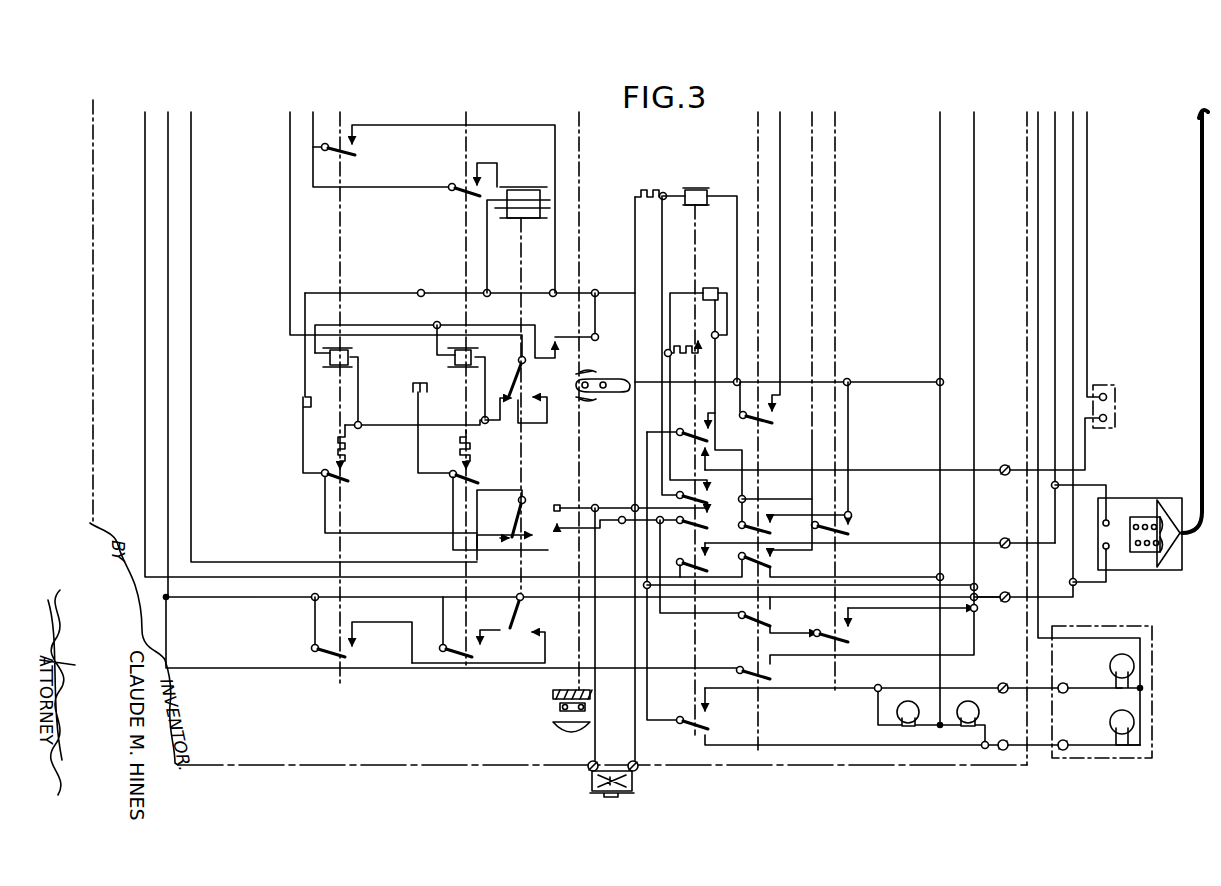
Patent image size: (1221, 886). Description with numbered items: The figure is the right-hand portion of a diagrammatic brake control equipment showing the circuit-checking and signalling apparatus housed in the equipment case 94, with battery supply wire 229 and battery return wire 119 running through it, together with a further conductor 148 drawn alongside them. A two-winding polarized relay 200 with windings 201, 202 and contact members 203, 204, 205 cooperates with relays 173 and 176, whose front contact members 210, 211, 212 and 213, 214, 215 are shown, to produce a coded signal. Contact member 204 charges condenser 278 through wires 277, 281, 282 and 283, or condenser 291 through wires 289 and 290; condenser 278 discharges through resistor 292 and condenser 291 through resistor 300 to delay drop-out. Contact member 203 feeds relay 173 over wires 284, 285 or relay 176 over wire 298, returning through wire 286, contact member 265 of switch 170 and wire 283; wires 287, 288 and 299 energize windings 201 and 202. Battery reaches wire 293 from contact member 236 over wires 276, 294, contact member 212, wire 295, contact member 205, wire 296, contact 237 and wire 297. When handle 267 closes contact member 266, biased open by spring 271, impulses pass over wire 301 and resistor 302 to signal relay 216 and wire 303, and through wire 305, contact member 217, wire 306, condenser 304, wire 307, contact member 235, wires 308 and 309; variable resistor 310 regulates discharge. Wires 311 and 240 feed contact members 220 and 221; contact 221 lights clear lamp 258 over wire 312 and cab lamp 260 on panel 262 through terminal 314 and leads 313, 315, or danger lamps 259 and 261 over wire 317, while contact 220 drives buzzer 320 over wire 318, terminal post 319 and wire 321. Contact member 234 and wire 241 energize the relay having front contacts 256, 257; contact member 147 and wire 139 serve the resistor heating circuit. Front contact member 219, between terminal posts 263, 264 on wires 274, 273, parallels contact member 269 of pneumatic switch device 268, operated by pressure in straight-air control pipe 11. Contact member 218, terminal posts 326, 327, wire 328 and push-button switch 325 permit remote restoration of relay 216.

The straight-air control pipe 11 is at (1195, 334).
The equipment case 94 is at (89, 178).
The battery return wire 119 is at (940, 130).
The wire 139 is at (145, 257).
The front and back contact member 147 is at (771, 561).
The conductor 148 is at (812, 207).
The switch 170 is at (574, 385).
The relay 173 is at (353, 356).
The relay 176 is at (478, 356).
The two-winding polarized relay 200 is at (521, 185).
The winding 201 is at (530, 199).
The winding 202 is at (524, 220).
The contact member 203 is at (507, 389).
The contact member 204 is at (511, 531).
The contact member 205 is at (519, 618).
The front contact member 210 is at (352, 149).
The front contact member 211 is at (352, 475).
The front contact member 212 is at (348, 633).
The front contact member 213 is at (468, 193).
The front contact member 214 is at (484, 475).
The front contact member 215 is at (483, 633).
The signal relay 216 is at (683, 188).
The front contact member 217 is at (745, 491).
The front contact member 218 is at (715, 519).
The front contact member 219 is at (711, 560).
The front and back contact member 220 is at (697, 446).
The front and back contact member 221 is at (711, 711).
The battery supply wire 229 is at (974, 193).
The front contact member 234 is at (908, 575).
The front contact member 235 is at (773, 529).
The front contact member 236 is at (773, 673).
The front and back contact member 237 is at (781, 614).
The wire 240 is at (647, 648).
The wire 241 is at (778, 150).
The front contact 256 is at (852, 529).
The front contact 257 is at (853, 630).
The signal lamp 258 is at (895, 718).
The danger signal lamp 259 is at (982, 711).
The signal lamp 260 is at (1134, 661).
The danger signal lamp 261 is at (1134, 727).
The indicating panel 262 is at (1154, 640).
The terminal post 263 is at (1002, 539).
The terminal post 264 is at (1003, 592).
The contact member 265 is at (597, 340).
The contact member 266 is at (580, 508).
The handle 267 is at (611, 396).
The pneumatic switch device 268 is at (1120, 577).
The contact member 269 is at (1112, 552).
The spring 271 is at (553, 713).
The wire 273 is at (1073, 225).
The wire 274 is at (1055, 255).
The wire 276 is at (275, 669).
The wire 277 is at (168, 187).
The condenser 278 is at (302, 403).
The wire 281 is at (191, 122).
The wire 282 is at (408, 533).
The wire 283 is at (416, 291).
The wire 284 is at (290, 257).
The wire 285 is at (478, 420).
The wire 286 is at (432, 323).
The wire 287 is at (452, 130).
The wire 288 is at (508, 407).
The wire 289 is at (453, 501).
The wire 290 is at (418, 449).
The condenser 291 is at (439, 379).
The resistor 292 is at (346, 448).
The wire 293 is at (621, 525).
The wire 294 is at (272, 598).
The wire 295 is at (412, 633).
The wire 296 is at (586, 600).
The wire 297 is at (705, 616).
The wire 298 is at (546, 426).
The wire 299 is at (440, 187).
The resistor 300 is at (478, 449).
The wire 301 is at (635, 658).
The current limiting resistor 302 is at (640, 189).
The wire 303 is at (740, 237).
The condenser 304 is at (703, 291).
The wire 305 is at (678, 345).
The wire 306 is at (684, 403).
The wire 307 is at (730, 407).
The wire 308 is at (815, 518).
The wire 309 is at (851, 411).
The variable resistor 310 is at (686, 359).
The wire 311 is at (955, 582).
The wire 312 is at (830, 690).
The lead wire 313 is at (1040, 690).
The terminal 314 is at (1000, 684).
The lead wire 315 is at (1038, 130).
The wire 317 is at (830, 745).
The wire 318 is at (902, 470).
The terminal post 319 is at (1001, 466).
The buzzer 320 is at (1104, 432).
The wire 321 is at (1087, 130).
The push-button switch 325 is at (631, 793).
The terminal post 326 is at (589, 761).
The terminal post 327 is at (637, 761).
The wire 328 is at (595, 633).